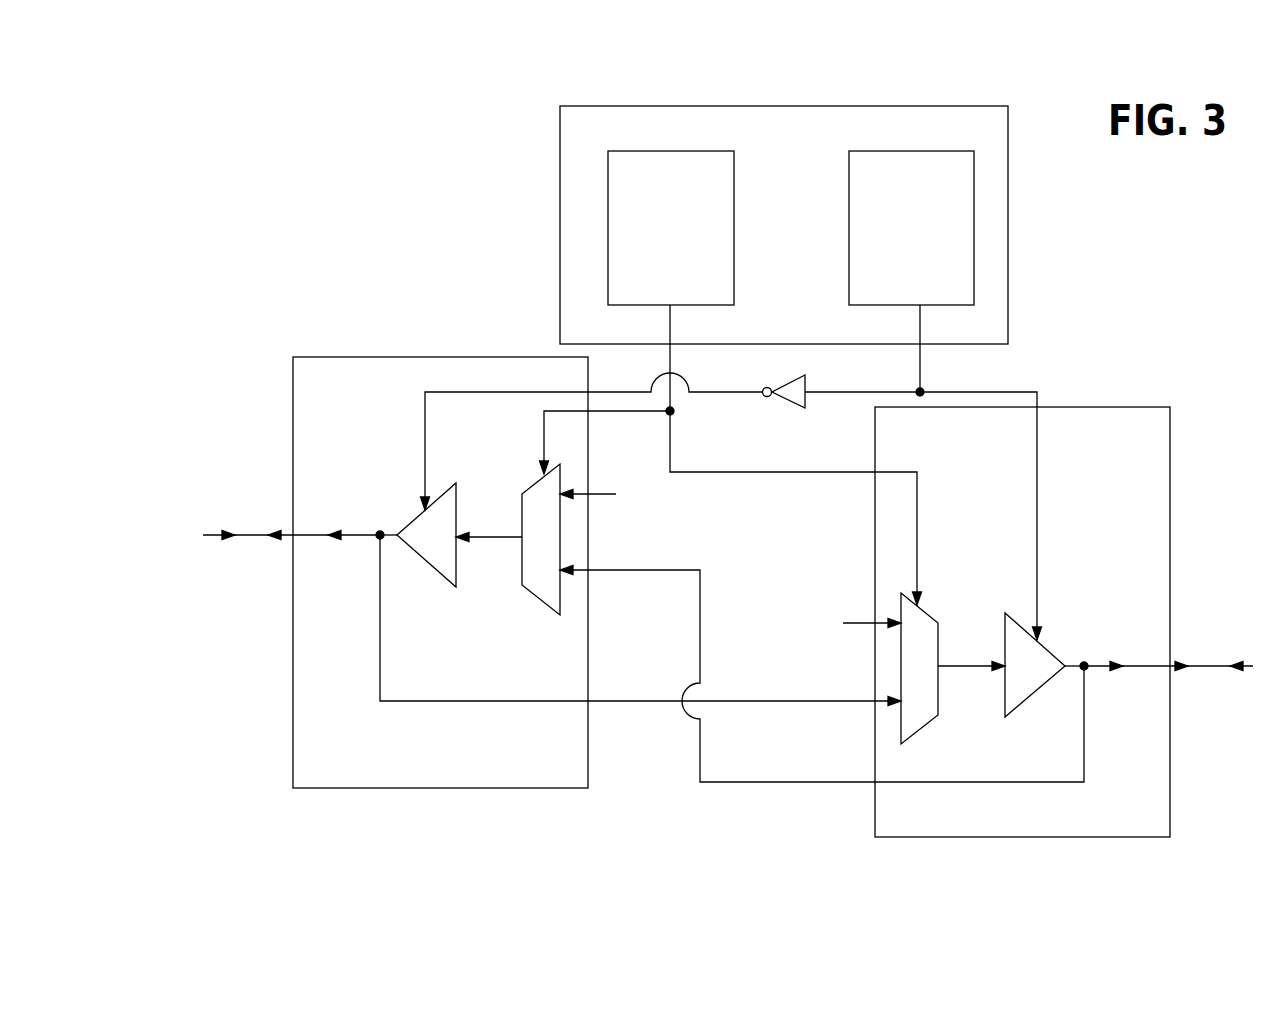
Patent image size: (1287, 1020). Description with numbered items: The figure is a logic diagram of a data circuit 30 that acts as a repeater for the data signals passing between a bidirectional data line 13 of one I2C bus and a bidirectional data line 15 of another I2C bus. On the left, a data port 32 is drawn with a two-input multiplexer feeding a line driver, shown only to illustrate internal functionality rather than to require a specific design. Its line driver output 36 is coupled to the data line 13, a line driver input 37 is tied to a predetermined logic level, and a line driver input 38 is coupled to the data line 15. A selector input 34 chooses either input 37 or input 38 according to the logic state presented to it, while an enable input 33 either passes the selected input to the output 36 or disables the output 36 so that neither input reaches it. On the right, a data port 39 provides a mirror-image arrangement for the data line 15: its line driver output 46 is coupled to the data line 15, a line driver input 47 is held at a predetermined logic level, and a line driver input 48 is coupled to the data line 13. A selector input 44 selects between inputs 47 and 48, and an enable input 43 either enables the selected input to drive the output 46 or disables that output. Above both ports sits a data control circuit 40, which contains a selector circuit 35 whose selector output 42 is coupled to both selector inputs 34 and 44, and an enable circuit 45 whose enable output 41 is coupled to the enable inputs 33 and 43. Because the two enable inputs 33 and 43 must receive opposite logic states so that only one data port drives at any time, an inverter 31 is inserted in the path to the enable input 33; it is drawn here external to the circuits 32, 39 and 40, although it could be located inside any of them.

The data circuit 30 is at (388, 173).
The data control circuit 40 is at (607, 136).
The selector circuit 35 is at (681, 246).
The enable circuit 45 is at (924, 244).
The selector output 42 is at (672, 355).
The enable output 41 is at (918, 368).
The inverter 31 is at (792, 405).
The enable input 33 is at (597, 391).
The selector input 34 is at (614, 412).
The selector input 44 is at (835, 475).
The enable input 43 is at (1027, 389).
The data port 32 is at (432, 782).
The line driver output 36 is at (367, 540).
The data line 13 is at (213, 532).
The line driver input 37 is at (600, 497).
The line driver input 38 is at (600, 573).
The line driver input 48 is at (853, 703).
The data port 39 is at (1040, 836).
The line driver input 47 is at (853, 627).
The line driver output 46 is at (1070, 663).
The data line 15 is at (1242, 665).